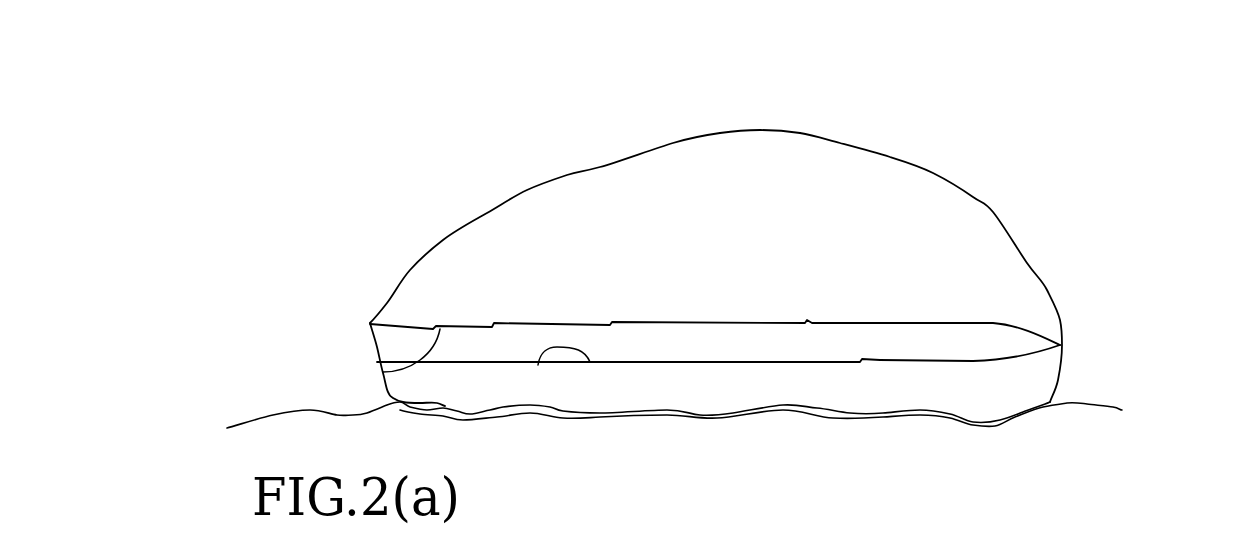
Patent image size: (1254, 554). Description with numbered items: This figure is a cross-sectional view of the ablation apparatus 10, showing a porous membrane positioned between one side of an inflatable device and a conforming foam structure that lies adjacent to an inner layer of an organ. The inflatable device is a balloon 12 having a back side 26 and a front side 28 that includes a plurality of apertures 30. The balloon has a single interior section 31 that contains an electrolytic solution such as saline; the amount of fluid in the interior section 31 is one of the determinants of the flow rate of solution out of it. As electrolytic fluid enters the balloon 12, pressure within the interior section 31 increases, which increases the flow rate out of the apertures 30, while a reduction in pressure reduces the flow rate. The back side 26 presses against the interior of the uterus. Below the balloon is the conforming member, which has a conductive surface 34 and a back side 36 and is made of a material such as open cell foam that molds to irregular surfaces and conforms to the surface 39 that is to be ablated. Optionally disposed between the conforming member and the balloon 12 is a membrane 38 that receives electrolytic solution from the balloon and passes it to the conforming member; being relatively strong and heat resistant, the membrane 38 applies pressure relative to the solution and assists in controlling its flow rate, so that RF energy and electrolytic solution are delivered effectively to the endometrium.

The ablation apparatus 10 is at (1076, 232).
The balloon 12 is at (993, 212).
The back side 26 is at (750, 130).
The front side 28 is at (383, 372).
The apertures 30 is at (517, 322).
The interior section 31 is at (893, 192).
The conductive surface 34 is at (440, 403).
The back side 36 is at (538, 365).
The membrane 38 is at (877, 342).
The surface 39 is at (1083, 402).